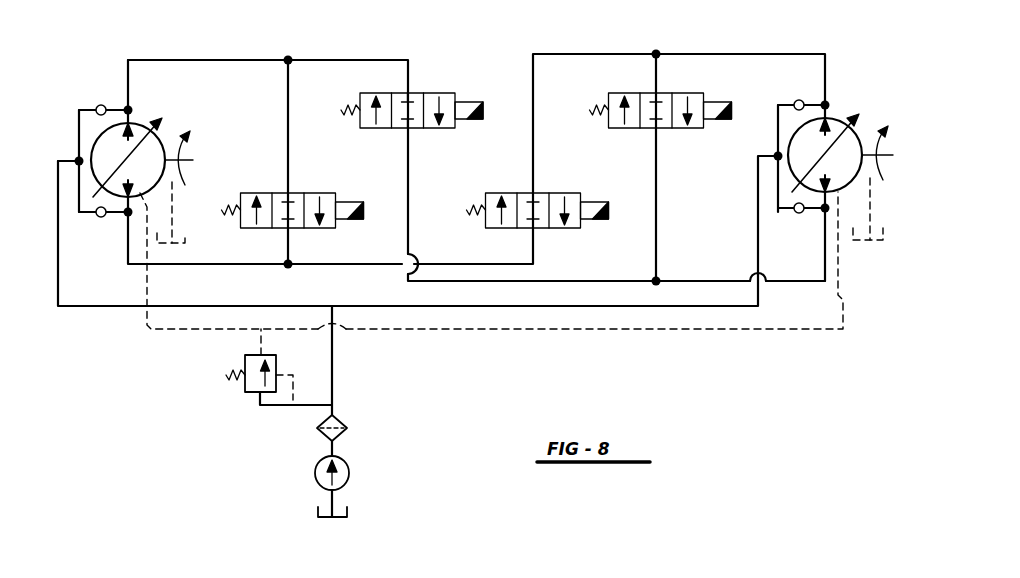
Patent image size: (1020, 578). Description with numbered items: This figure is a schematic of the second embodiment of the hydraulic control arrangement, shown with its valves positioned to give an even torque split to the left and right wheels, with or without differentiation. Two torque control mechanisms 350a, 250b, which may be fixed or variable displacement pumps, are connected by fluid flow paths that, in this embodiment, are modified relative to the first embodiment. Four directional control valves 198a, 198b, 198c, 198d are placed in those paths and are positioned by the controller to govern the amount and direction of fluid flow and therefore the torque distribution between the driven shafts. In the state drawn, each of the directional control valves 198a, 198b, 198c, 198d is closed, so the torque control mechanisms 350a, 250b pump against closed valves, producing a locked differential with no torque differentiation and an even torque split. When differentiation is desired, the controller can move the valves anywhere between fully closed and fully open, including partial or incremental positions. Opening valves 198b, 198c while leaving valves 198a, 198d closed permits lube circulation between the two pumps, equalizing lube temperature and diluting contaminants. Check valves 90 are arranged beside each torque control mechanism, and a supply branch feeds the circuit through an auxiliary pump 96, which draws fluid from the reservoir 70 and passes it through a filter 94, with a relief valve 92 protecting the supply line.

The check valves 90 is at (98, 105).
The torque control mechanism 350a is at (140, 122).
The variable displacement hydraulic motor 250b is at (837, 120).
The directional control valve 198a is at (305, 193).
The directional control valve 198b is at (427, 93).
The directional control valve 198c is at (548, 193).
The directional control valve 198d is at (694, 93).
The relief valve 92 is at (245, 392).
The filter 94 is at (340, 418).
The auxiliary pump 96 is at (346, 460).
The reservoir 70 is at (340, 517).